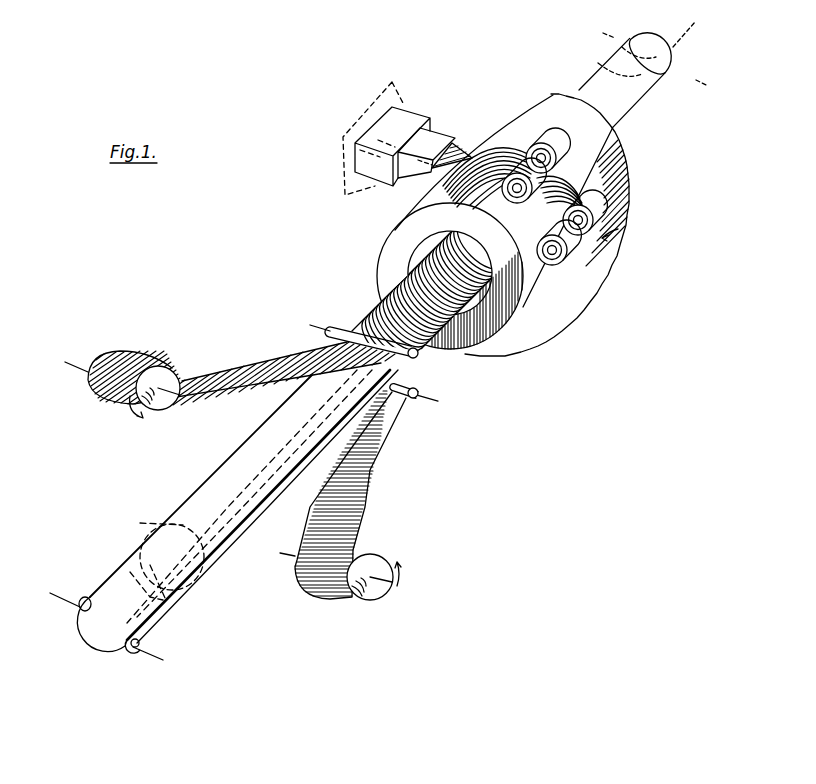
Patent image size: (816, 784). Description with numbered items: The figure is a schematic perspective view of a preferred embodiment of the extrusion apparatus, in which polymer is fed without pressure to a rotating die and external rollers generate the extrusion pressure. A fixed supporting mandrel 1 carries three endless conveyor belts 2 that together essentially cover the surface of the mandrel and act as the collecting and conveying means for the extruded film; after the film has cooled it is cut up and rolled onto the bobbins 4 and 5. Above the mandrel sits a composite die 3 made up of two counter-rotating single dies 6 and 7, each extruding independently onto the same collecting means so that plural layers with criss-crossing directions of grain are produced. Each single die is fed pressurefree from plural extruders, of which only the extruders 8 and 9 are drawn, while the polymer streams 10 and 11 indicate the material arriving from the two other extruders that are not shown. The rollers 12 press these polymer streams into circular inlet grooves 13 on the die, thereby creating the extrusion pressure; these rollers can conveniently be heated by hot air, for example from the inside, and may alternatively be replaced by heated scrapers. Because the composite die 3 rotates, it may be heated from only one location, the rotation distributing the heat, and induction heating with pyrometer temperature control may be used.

The fixed supporting mandrel 1 is at (641, 117).
The endless conveyor belts 2 is at (662, 88).
The composite die 3 is at (616, 227).
The bobbin 4 is at (158, 378).
The bobbin 5 is at (375, 562).
The single die 6 is at (628, 182).
The single die 7 is at (522, 306).
The extruder 8 is at (415, 117).
The extruder 9 is at (380, 168).
The polymer stream 10 is at (490, 167).
The polymer stream 11 is at (492, 172).
The rollers 12 is at (558, 260).
The circular inlet grooves 13 is at (517, 192).